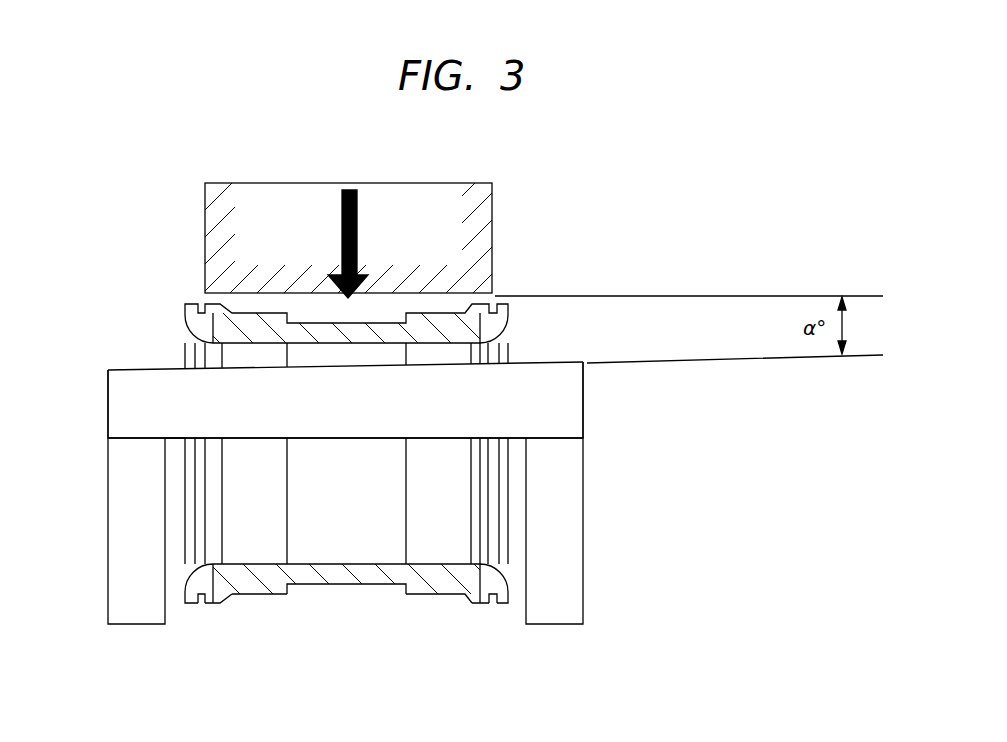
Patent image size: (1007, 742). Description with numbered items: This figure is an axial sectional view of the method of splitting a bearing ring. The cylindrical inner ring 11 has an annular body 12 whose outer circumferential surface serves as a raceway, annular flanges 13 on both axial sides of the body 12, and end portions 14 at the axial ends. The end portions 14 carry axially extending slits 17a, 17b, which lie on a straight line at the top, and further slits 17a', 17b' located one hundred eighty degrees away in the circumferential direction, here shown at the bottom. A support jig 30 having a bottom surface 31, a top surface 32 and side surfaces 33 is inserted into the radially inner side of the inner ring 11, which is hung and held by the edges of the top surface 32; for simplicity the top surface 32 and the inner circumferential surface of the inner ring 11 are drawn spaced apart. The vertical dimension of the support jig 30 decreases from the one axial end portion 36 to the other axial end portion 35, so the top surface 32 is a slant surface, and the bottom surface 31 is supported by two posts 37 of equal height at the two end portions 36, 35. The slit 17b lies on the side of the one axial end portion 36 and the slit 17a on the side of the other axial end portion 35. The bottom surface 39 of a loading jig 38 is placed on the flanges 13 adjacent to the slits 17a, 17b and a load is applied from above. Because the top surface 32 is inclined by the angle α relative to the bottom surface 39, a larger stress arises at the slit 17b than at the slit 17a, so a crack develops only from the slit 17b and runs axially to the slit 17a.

The inner ring 11 is at (257, 617).
The annular body 12 is at (332, 605).
The annular flange 13 is at (435, 650).
The end portion 14 is at (465, 683).
The slit 17a is at (246, 293).
The slit 17b is at (459, 293).
The slit 17a' is at (259, 620).
The slit 17b' is at (440, 620).
The support jig 30 is at (153, 358).
The bottom surface 31 is at (177, 450).
The top surface 32 is at (128, 367).
The side surface 33 is at (142, 420).
The other axial end portion 35 is at (108, 400).
The one axial end portion 36 is at (583, 397).
The post 37 is at (628, 583).
The loading jig 38 is at (495, 203).
The bottom surface 39 is at (300, 288).